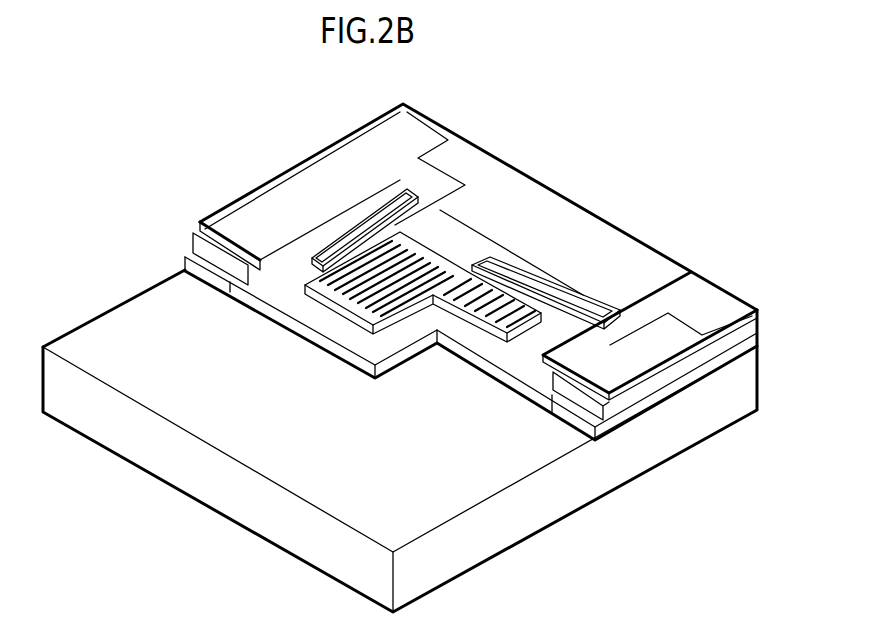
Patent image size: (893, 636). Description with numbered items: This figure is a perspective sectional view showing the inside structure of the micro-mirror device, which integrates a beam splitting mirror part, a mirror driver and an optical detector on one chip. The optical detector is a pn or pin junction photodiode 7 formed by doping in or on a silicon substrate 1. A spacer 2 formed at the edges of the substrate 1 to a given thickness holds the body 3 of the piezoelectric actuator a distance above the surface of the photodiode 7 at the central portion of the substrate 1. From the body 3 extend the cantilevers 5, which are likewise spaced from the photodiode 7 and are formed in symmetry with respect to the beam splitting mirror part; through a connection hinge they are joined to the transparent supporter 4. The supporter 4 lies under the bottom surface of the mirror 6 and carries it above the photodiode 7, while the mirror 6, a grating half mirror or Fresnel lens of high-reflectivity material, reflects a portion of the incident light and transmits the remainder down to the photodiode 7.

The substrate 1 is at (202, 482).
The spacer 2 is at (637, 393).
The body 3 is at (545, 205).
The supporter 4 is at (330, 303).
The cantilever 5 is at (553, 303).
The mirror 6 is at (352, 247).
The photodiode 7 is at (387, 340).